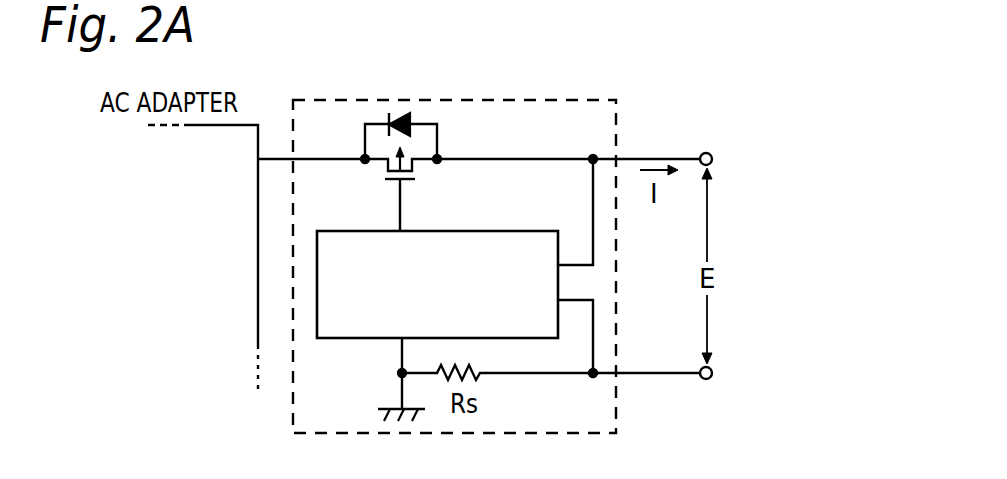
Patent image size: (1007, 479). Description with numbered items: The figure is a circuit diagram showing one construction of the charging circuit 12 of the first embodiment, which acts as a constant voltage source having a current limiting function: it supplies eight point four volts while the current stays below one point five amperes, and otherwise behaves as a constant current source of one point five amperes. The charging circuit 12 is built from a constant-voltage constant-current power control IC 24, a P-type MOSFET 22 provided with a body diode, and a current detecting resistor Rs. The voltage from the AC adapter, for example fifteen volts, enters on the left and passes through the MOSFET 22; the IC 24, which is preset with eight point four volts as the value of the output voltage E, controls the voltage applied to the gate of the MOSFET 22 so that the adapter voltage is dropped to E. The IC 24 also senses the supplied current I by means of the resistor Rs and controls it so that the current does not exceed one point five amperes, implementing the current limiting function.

The charging circuit 12 is at (616, 115).
The P-type MOSFET 22 is at (384, 176).
The constant-voltage constant-current power control IC 24 is at (376, 340).